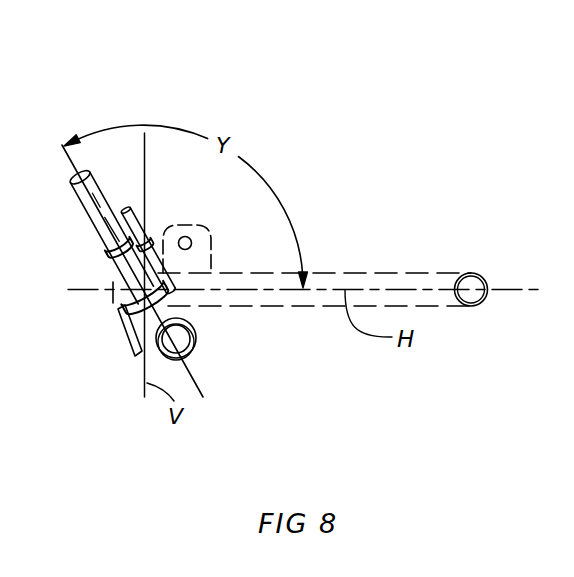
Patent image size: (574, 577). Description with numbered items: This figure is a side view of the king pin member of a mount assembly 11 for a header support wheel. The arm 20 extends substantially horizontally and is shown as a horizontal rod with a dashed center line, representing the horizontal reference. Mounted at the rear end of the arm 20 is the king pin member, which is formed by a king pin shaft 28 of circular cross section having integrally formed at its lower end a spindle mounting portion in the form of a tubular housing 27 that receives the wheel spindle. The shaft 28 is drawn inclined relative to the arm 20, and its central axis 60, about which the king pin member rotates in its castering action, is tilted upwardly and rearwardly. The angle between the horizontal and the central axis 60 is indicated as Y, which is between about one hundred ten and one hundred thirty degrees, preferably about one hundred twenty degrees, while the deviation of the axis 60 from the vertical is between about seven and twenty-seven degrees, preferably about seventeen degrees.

The mount assembly 11 is at (68, 331).
The arm 20 is at (370, 273).
The tubular housing 27 is at (186, 319).
The king pin shaft 28 is at (76, 198).
The central axis 60 is at (62, 146).